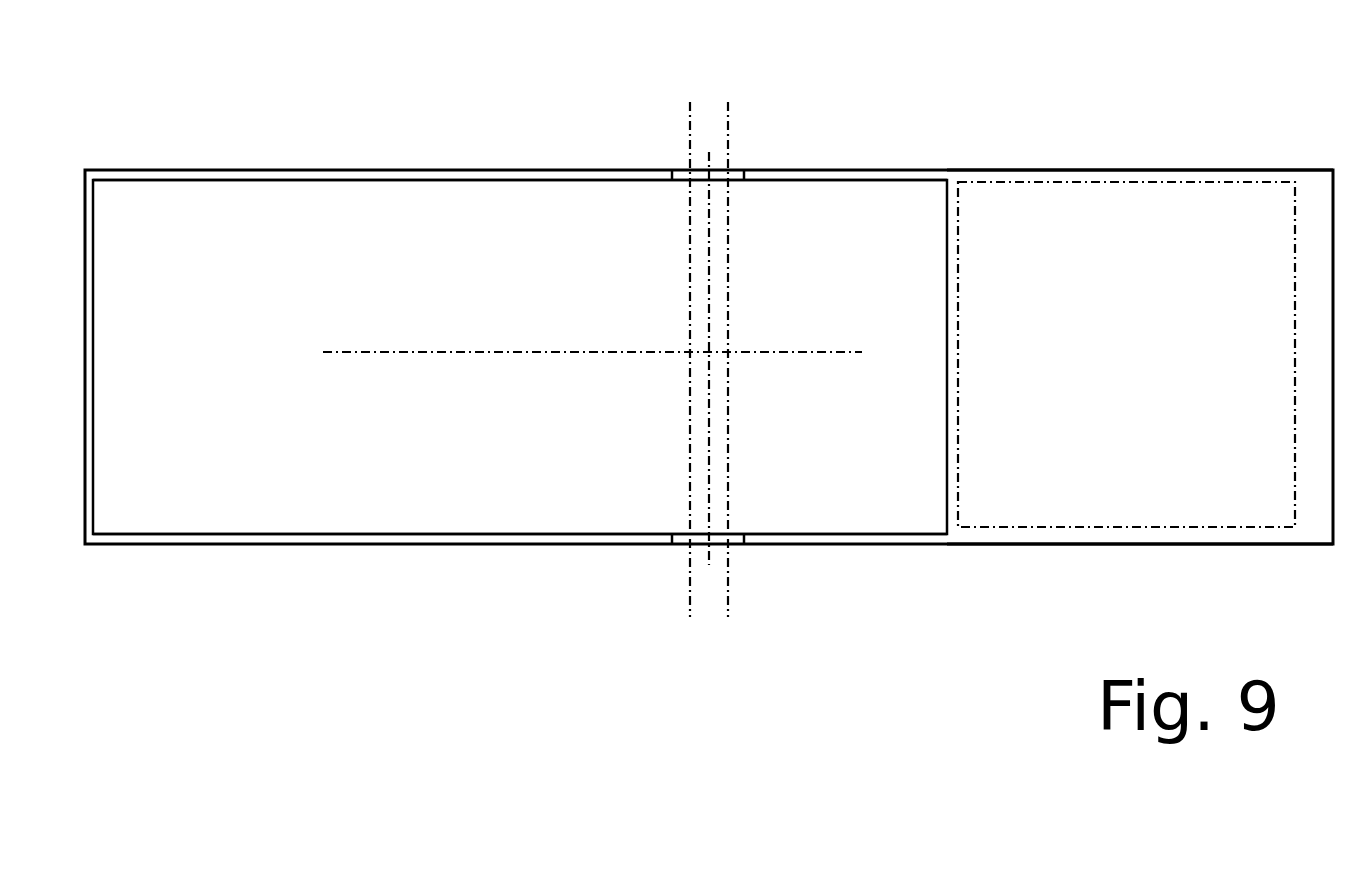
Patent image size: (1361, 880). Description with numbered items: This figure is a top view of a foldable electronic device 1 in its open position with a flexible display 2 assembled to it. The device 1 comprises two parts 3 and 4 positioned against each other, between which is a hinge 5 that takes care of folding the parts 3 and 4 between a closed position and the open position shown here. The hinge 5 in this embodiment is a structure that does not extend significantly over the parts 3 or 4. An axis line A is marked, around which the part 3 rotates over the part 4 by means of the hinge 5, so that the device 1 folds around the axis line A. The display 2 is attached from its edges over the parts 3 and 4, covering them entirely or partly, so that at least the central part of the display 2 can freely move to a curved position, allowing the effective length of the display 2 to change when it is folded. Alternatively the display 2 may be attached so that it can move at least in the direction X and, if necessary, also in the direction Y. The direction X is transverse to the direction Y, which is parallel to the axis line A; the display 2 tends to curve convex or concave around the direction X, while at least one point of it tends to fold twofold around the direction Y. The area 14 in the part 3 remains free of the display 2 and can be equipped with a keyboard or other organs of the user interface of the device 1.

The device 1 is at (222, 147).
The display 2 is at (868, 225).
The part 3 is at (1028, 545).
The part 4 is at (441, 546).
The hinge 5 is at (682, 539).
The area 14 is at (1102, 232).
The direction X is at (422, 350).
The direction Y is at (688, 112).
The axis line A is at (708, 555).